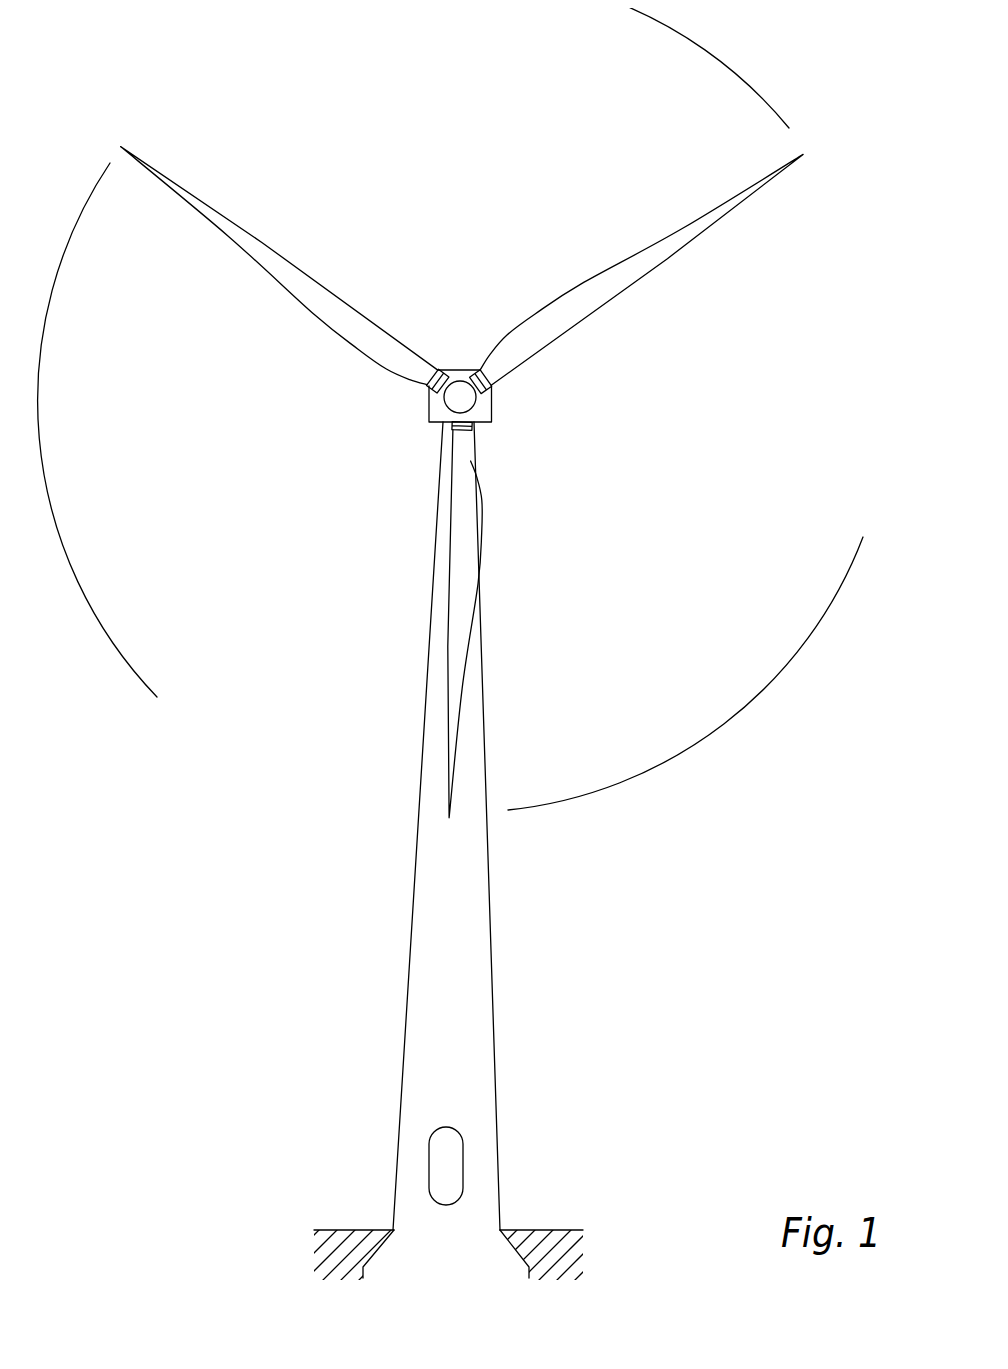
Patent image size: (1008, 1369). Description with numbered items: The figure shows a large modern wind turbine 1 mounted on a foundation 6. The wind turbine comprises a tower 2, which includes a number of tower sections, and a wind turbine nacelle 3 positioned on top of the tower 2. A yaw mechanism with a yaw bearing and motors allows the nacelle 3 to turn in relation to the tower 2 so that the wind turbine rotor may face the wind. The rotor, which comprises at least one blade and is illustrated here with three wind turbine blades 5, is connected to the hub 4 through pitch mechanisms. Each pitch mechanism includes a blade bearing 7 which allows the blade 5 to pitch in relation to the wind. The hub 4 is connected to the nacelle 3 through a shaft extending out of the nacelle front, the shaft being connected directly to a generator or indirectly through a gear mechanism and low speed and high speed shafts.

The wind turbine 1 is at (378, 1041).
The tower 2 is at (487, 912).
The wind turbine nacelle 3 is at (490, 420).
The hub 4 is at (457, 389).
The wind turbine blades 5 is at (458, 657).
The foundation 6 is at (366, 1264).
The blade bearing 7 is at (427, 393).